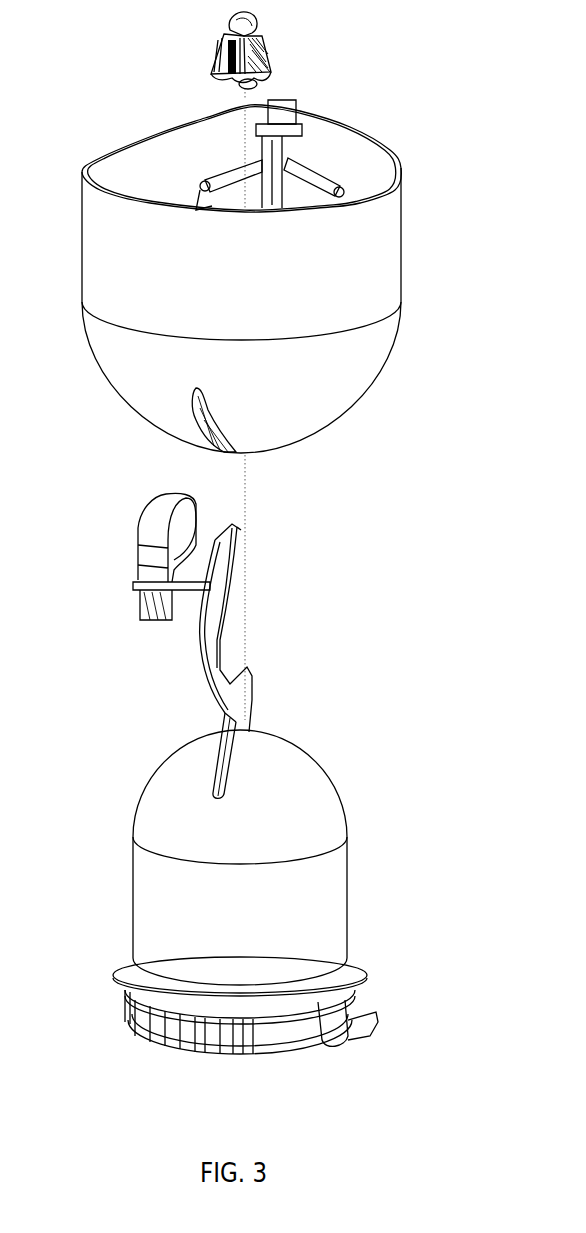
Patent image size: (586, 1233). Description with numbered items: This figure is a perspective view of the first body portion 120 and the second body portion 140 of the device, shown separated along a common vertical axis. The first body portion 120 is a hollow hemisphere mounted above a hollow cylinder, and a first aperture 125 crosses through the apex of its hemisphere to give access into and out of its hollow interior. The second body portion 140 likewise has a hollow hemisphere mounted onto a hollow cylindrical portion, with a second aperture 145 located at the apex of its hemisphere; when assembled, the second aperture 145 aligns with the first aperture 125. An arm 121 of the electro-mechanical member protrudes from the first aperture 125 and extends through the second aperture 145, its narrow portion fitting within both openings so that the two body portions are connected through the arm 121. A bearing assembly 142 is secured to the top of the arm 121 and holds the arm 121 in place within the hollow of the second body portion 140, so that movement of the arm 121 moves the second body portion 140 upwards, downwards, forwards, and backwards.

The first body portion 120 is at (328, 793).
The arm 121 is at (240, 688).
The first aperture 125 is at (220, 772).
The second body portion 140 is at (398, 238).
The bearing assembly 142 is at (272, 44).
The second aperture 145 is at (202, 430).